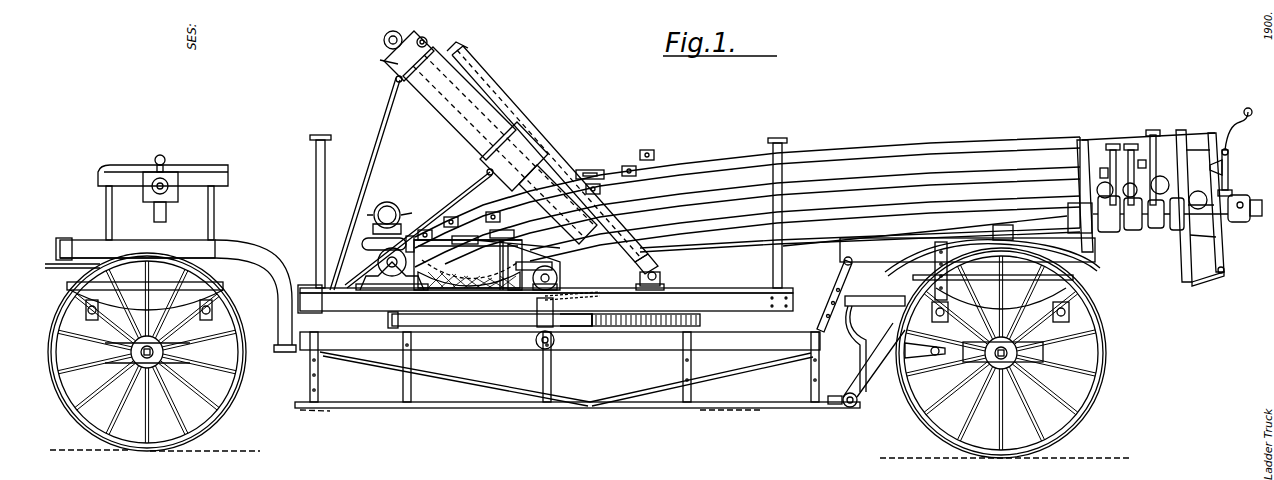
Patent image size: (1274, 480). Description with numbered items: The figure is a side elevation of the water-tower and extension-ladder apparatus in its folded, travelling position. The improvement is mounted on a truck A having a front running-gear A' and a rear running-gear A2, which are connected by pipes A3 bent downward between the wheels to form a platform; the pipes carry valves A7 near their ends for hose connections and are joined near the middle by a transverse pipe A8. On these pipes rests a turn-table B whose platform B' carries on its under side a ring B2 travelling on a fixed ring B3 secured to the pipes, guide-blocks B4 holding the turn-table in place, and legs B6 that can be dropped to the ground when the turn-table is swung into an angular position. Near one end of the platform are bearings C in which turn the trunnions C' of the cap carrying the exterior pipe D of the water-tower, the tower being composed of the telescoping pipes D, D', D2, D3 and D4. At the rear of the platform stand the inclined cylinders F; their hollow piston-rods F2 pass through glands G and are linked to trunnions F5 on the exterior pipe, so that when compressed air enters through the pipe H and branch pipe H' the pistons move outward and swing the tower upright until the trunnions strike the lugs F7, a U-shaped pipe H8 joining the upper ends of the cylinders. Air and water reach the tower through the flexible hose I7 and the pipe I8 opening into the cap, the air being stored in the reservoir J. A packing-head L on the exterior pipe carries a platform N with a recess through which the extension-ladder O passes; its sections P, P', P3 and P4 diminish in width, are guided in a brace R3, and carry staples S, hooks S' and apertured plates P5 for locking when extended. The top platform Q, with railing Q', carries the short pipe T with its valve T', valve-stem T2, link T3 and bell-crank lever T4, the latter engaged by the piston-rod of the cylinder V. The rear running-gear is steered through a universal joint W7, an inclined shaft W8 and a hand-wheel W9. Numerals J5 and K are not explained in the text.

The truck A is at (170, 275).
The front running-gear A' is at (147, 352).
The rear running-gear A2 is at (1108, 367).
The pipes A3 is at (577, 370).
The valve A7 is at (1052, 240).
The transverse pipe A8 is at (540, 346).
The turn-table B is at (137, 348).
The platform B' is at (545, 292).
The ring B2 is at (636, 326).
The ring B3 is at (606, 326).
The guide-blocks B4 is at (386, 320).
The legs B6 is at (314, 198).
The bearings C is at (375, 269).
The trunnions C' is at (377, 242).
The exterior pipe D is at (873, 234).
The telescoping pipe D' is at (1106, 223).
The telescoping pipe D2 is at (1134, 230).
The telescoping pipe D3 is at (1156, 230).
The interior pipe D4 is at (1176, 232).
The cylinders F is at (490, 140).
The hollow piston-rod F2 is at (380, 60).
The trunnions F5 is at (395, 30).
The lugs F7 is at (426, 37).
The gland G is at (392, 78).
The pipe H is at (658, 278).
The branch pipe H' is at (506, 256).
The U-shaped pipe H8 is at (545, 116).
The flexible hose I7 is at (484, 282).
The pipe I8 is at (388, 206).
The reservoir J is at (566, 379).
The brace pin J5 is at (860, 400).
The bracket K is at (534, 266).
The packing-head L is at (548, 268).
The platform N is at (1083, 138).
The extension-ladder O is at (747, 199).
The ladder-section P is at (860, 230).
The ladder-section P' is at (1009, 205).
The ladder-section P3 is at (950, 138).
The ladder-section P4 is at (904, 154).
The plates P5 is at (460, 222).
The platform Q is at (1192, 280).
The railing Q' is at (1212, 263).
The brace R3 is at (1153, 130).
The staple S is at (1108, 160).
The hook S' is at (474, 213).
The short pipe T is at (1245, 213).
The valve T' is at (1235, 183).
The valve-stem T2 is at (1240, 222).
The link T3 is at (1228, 166).
The bell-crank lever T4 is at (1230, 130).
The cylinder V is at (1190, 150).
The universal joint W7 is at (925, 359).
The shaft W8 is at (905, 345).
The hand-wheel W9 is at (852, 268).